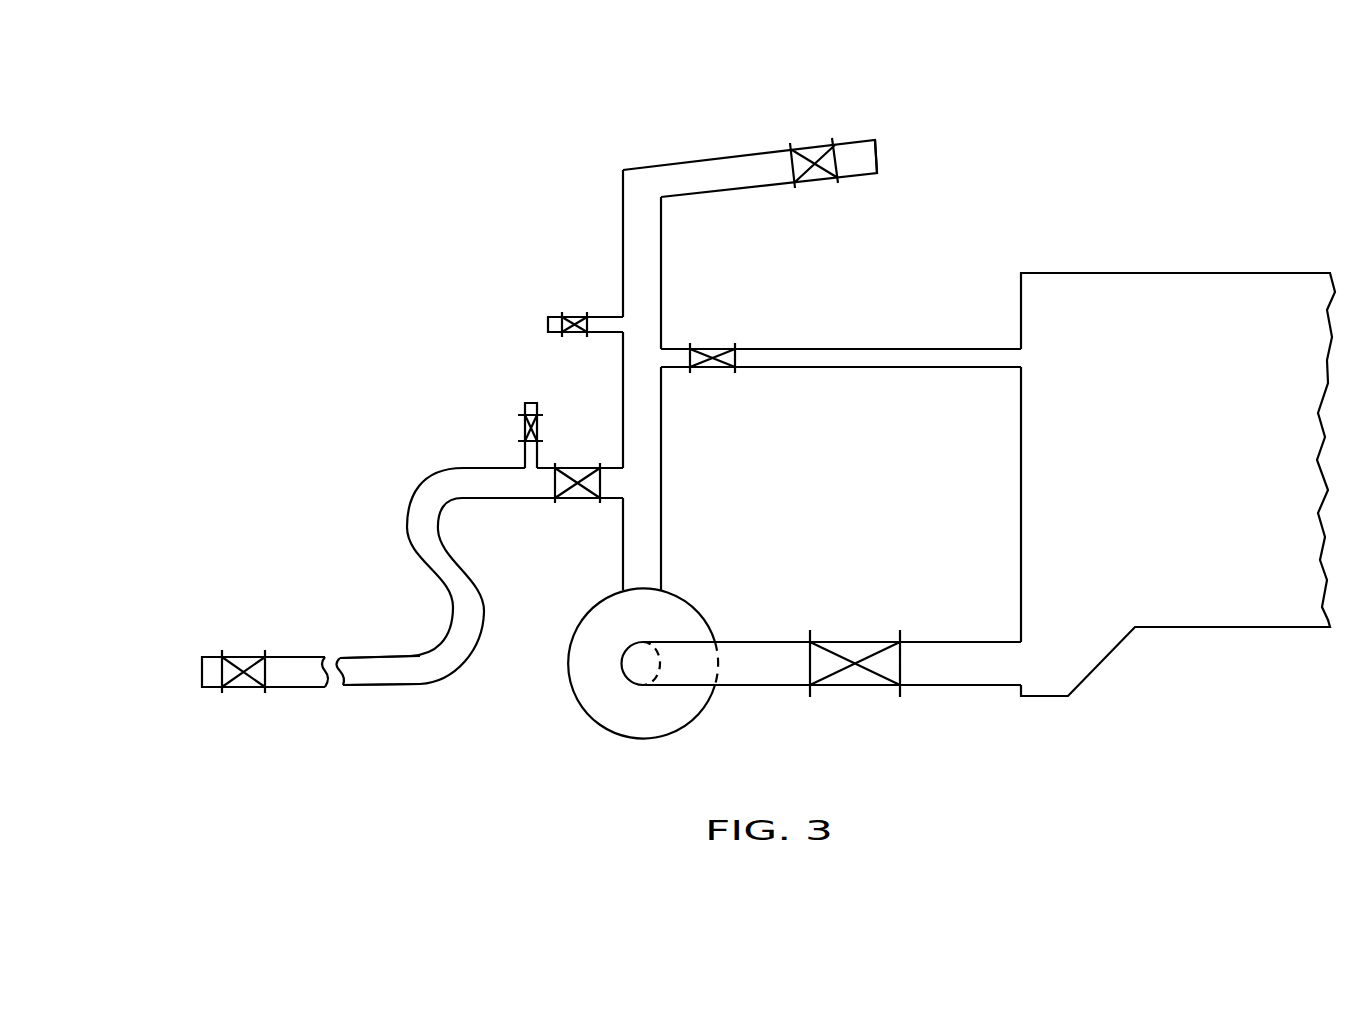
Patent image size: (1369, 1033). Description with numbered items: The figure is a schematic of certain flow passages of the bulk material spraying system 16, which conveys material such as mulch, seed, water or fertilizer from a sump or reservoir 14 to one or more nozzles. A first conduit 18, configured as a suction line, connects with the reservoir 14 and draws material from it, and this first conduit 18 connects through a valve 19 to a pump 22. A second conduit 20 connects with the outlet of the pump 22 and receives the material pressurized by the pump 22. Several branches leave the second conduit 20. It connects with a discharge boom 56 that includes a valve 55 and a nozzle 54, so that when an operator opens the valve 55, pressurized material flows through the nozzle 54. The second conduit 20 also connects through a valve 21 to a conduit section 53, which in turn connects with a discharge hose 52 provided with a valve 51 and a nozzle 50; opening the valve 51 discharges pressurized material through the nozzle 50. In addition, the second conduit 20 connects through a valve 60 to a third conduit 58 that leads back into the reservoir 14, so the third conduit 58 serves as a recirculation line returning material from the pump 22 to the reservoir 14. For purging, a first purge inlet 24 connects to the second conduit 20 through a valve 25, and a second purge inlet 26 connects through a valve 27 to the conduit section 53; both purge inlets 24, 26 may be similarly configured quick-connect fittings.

The reservoir 14 is at (1180, 463).
The bulk material spraying system 16 is at (298, 313).
The first conduit 18 is at (777, 622).
The valve 19 is at (855, 643).
The second conduit 20 is at (677, 443).
The valve 21 is at (573, 498).
The pump 22 is at (580, 730).
The first purge inlet 24 is at (558, 318).
The valve 25 is at (573, 318).
The second purge inlet 26 is at (532, 403).
The valve 27 is at (525, 423).
The nozzle 50 is at (205, 672).
The valve 51 is at (243, 657).
The discharge hose 52 is at (358, 657).
The conduit section 53 is at (507, 500).
The nozzle 54 is at (872, 157).
The valve 55 is at (813, 150).
The discharge boom 56 is at (682, 138).
The third conduit 58 is at (873, 342).
The valve 60 is at (710, 353).